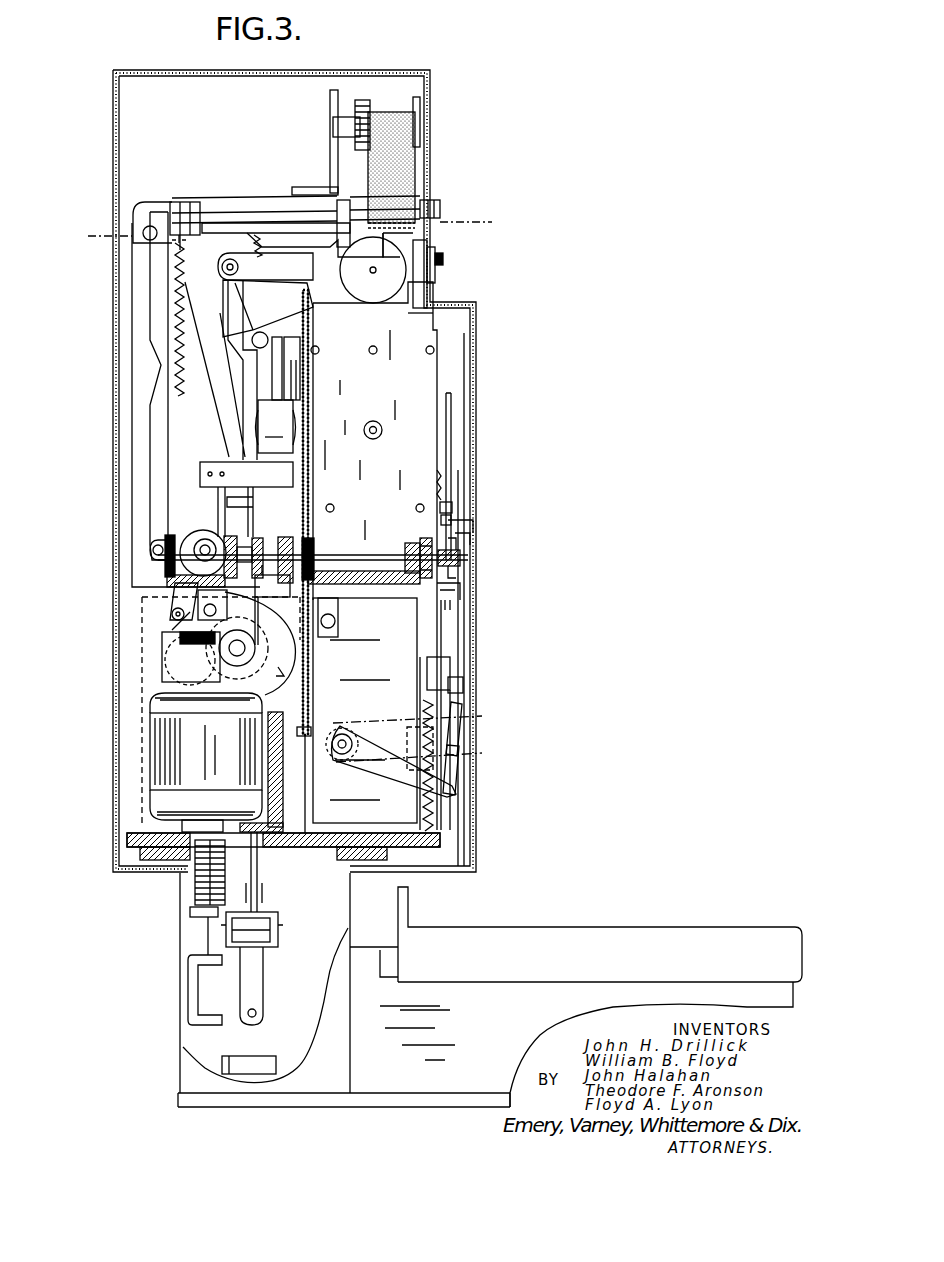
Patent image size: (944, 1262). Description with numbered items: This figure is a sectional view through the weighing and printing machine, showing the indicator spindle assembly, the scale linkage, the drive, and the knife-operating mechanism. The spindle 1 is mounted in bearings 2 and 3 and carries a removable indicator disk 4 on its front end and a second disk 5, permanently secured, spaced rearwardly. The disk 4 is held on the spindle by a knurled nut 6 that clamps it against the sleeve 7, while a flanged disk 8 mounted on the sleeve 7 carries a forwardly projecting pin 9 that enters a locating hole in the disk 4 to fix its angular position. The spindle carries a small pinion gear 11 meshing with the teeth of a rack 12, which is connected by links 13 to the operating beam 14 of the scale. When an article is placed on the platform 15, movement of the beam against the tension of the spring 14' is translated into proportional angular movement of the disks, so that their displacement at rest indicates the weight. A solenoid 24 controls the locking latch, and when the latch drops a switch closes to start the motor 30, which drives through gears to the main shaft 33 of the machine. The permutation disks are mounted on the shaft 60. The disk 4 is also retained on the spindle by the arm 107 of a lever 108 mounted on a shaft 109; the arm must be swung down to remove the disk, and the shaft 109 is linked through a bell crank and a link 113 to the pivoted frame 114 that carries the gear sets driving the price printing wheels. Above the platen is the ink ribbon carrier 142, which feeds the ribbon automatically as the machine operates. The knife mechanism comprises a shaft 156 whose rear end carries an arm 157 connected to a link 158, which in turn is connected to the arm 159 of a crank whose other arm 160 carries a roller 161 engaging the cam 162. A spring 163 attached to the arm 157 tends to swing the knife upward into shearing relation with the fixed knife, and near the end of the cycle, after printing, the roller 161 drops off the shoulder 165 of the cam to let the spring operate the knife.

The spindle 1 is at (334, 562).
The bearing 2 is at (407, 545).
The bearing 3 is at (318, 549).
The disk 4 is at (453, 437).
The disk 5 is at (306, 432).
The knurled nut 6 is at (450, 557).
The sleeve 7 is at (421, 545).
The flanged disk 8 is at (444, 588).
The pin 9 is at (450, 506).
The pinion gear 11 is at (256, 550).
The rack 12 is at (262, 616).
The links 13 is at (258, 873).
The operating beam 14 is at (258, 968).
The spring 14' is at (179, 932).
The platform 15 is at (500, 938).
The solenoid 24 is at (276, 426).
The motor 30 is at (150, 748).
The shaft 33 is at (246, 648).
The shaft 60 is at (378, 424).
The arm 107 is at (458, 770).
The lever 108 is at (380, 768).
The shaft 109 is at (345, 738).
The link 113 is at (260, 368).
The frame 114 is at (293, 314).
The ink ribbon carrier 142 is at (422, 146).
The shaft 156 is at (238, 216).
The arm 157 is at (190, 205).
The link 158 is at (158, 432).
The arm 159 is at (183, 537).
The arm 160 is at (178, 603).
The roller 161 is at (188, 616).
The cam 162 is at (290, 655).
The spring 163 is at (185, 327).
The shoulder 165 is at (285, 620).